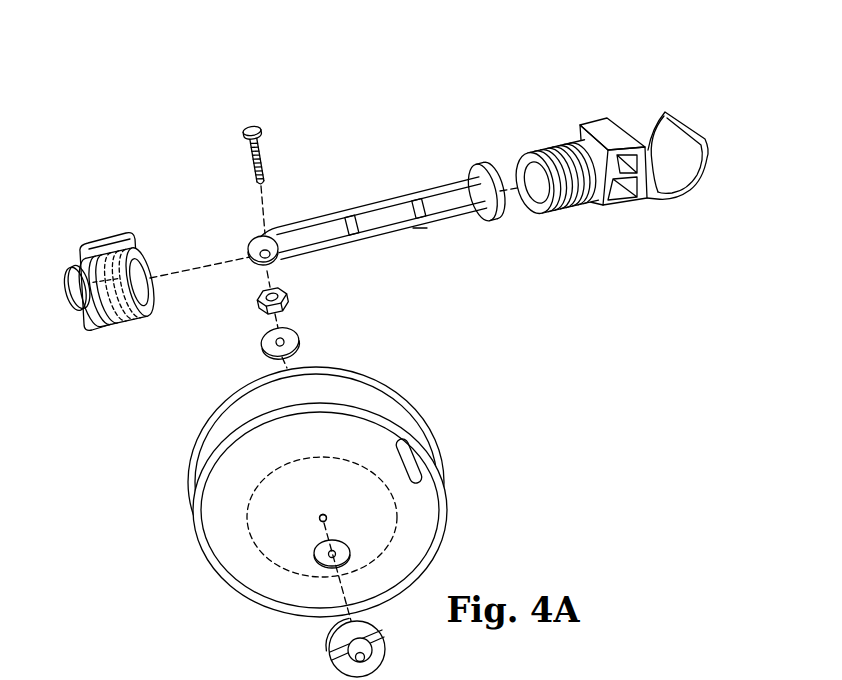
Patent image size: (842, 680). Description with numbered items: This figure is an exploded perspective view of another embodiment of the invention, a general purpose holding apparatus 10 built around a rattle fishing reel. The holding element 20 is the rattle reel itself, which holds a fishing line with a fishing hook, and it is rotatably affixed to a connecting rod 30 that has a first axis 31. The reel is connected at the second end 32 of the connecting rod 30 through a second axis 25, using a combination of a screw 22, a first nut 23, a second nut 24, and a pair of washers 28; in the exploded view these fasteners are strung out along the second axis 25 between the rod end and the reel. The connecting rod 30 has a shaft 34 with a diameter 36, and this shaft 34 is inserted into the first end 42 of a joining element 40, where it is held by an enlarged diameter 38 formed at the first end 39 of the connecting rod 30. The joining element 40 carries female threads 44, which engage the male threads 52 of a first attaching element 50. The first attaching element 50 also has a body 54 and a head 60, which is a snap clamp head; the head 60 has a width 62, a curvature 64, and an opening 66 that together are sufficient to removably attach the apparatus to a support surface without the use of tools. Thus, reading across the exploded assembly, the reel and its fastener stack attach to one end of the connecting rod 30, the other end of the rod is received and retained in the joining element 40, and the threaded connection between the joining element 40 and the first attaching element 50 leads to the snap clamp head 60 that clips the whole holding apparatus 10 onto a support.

The general purpose holding apparatus 10 is at (456, 92).
The holding element 20 is at (437, 446).
The screw 22 is at (257, 163).
The first nut 23 is at (287, 295).
The second nut 24 is at (331, 648).
The second axis 25 is at (282, 322).
The pair of washers 28 is at (293, 345).
The connecting rod 30 is at (370, 215).
The first axis 31 is at (203, 259).
The second end 32 is at (249, 260).
The shaft 34 is at (390, 217).
The diameter 36 is at (420, 236).
The enlarged diameter 38 is at (480, 175).
The first end 39 is at (503, 208).
The joining element 40 is at (120, 307).
The first end 42 is at (72, 312).
The female threads 44 is at (141, 258).
The first attaching element 50 is at (618, 158).
The male threads 52 is at (560, 160).
The body 54 is at (627, 186).
The head 60 is at (637, 203).
The width 62 is at (687, 153).
The curvature 64 is at (689, 190).
The opening 66 is at (650, 128).